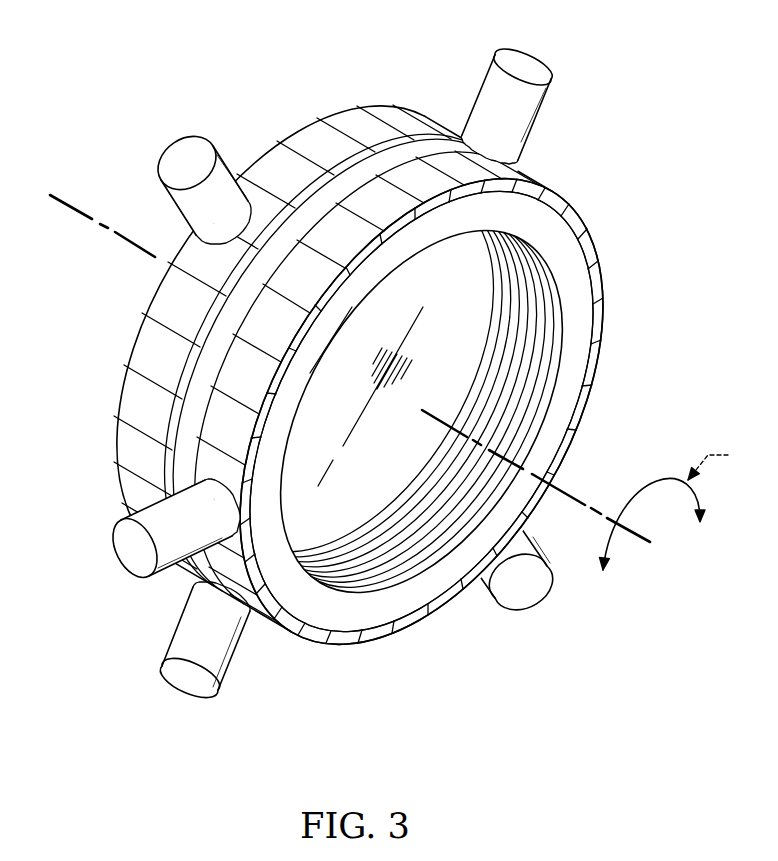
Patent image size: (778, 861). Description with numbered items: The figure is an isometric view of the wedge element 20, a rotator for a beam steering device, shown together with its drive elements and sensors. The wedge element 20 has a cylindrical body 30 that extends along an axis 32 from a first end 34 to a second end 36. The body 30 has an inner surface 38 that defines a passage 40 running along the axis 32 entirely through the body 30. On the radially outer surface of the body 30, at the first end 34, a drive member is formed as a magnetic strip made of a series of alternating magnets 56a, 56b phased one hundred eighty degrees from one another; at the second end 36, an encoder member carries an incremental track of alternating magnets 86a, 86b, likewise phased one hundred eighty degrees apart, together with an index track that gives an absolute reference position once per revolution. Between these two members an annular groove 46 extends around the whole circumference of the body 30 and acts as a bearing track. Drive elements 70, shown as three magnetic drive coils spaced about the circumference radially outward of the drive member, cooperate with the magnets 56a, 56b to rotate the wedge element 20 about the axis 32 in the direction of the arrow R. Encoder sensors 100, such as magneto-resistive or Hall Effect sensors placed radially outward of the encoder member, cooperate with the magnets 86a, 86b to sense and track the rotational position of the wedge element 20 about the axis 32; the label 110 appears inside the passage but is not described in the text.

The wedge element 20 is at (385, 380).
The cylindrical body 30 is at (578, 287).
The axis 32 is at (643, 543).
The first end 34 is at (88, 467).
The second end 36 is at (403, 655).
The inner surface 38 is at (540, 405).
The passage 40 is at (538, 352).
The annular groove 46 is at (218, 322).
The alternating magnets 56a is at (320, 127).
The alternating magnets 56b is at (350, 108).
The drive element 70 is at (181, 142).
The alternating magnets 86a is at (557, 200).
The alternating magnets 86b is at (578, 222).
The encoder sensor 100 is at (533, 58).
The interior passage 110 is at (362, 489).